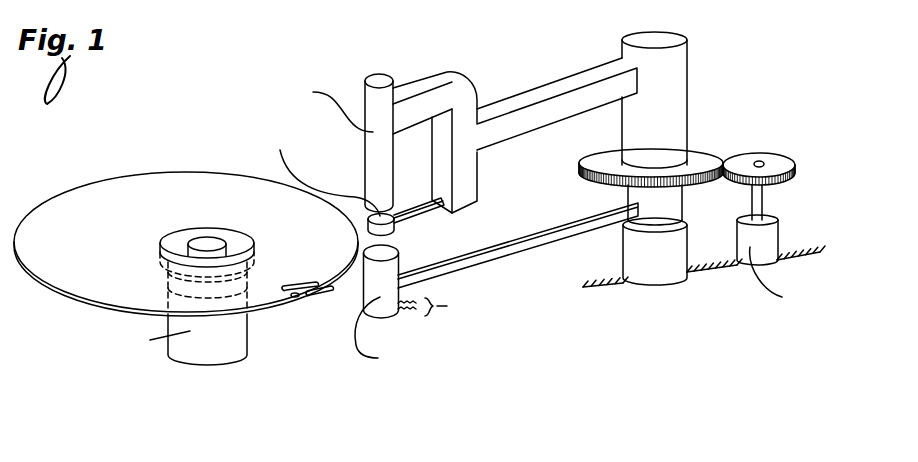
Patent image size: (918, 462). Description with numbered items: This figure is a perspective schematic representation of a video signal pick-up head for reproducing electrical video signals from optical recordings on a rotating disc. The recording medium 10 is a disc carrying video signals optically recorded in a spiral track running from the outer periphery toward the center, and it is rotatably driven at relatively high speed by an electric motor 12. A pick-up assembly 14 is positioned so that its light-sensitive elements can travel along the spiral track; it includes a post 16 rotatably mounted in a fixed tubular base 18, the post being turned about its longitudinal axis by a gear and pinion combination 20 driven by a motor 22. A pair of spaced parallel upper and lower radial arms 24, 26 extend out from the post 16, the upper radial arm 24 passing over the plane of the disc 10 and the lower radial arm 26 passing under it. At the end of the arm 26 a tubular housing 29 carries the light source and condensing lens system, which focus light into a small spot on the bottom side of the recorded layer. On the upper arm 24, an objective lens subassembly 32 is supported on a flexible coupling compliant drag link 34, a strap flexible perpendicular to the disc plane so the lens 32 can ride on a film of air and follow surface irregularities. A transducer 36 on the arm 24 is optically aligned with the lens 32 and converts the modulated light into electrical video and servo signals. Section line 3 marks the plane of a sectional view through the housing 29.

The section line for FIG. 3 is at (380, 68).
The recording medium 10 is at (100, 213).
The electric motor 12 is at (230, 347).
The pick-up assembly 14 is at (467, 142).
The post 16 is at (675, 83).
The fixed tubular base 18 is at (637, 248).
The gear and pinion combination 20 is at (730, 150).
The motor 22 is at (768, 232).
The upper radial arm 24 is at (575, 78).
The lower radial arm 26 is at (497, 244).
The tubular housing 29 is at (385, 269).
The objective lens subassembly 32 is at (372, 226).
The flexible coupling compliant drag link 34 is at (422, 215).
The transducer 36 is at (373, 160).